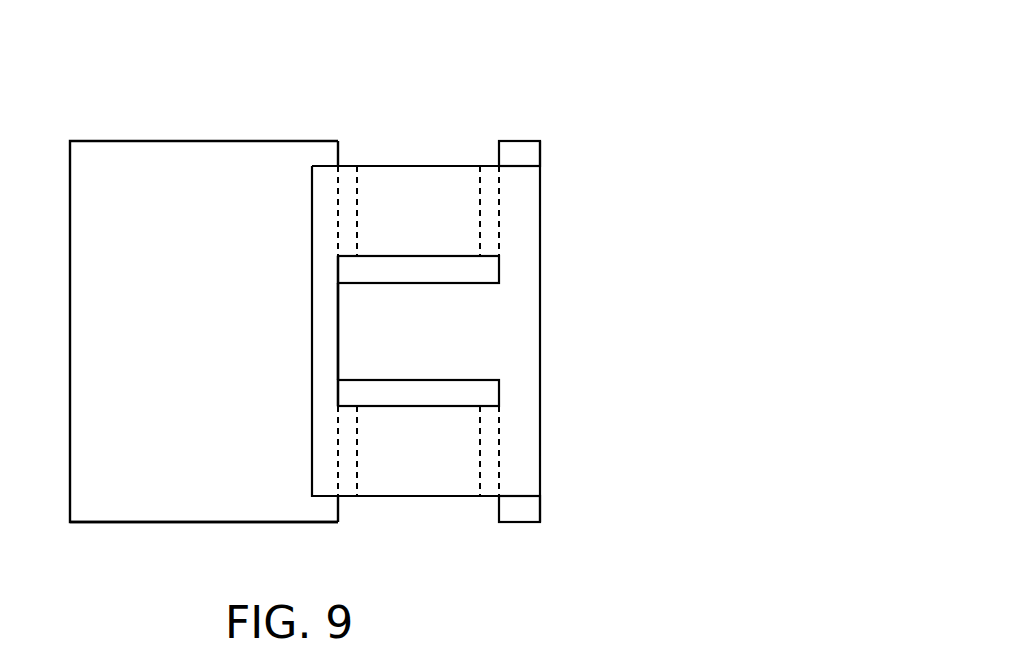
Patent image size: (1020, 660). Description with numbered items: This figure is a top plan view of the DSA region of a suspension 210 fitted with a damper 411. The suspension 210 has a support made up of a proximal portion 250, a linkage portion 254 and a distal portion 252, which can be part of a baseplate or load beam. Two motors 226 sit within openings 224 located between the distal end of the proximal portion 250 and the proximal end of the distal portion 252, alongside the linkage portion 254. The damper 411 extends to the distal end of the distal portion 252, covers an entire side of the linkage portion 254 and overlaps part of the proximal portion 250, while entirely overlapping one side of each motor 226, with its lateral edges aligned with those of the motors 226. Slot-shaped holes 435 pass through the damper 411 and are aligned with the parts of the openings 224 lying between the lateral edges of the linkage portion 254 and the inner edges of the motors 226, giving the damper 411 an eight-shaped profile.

The suspension 210 is at (105, 525).
The openings 224 is at (353, 146).
The motors 226 is at (407, 190).
The proximal portion 250 is at (127, 177).
The distal portion 252 is at (513, 152).
The linkage portion 254 is at (470, 352).
The damper 411 is at (498, 319).
The holes 435 is at (472, 265).